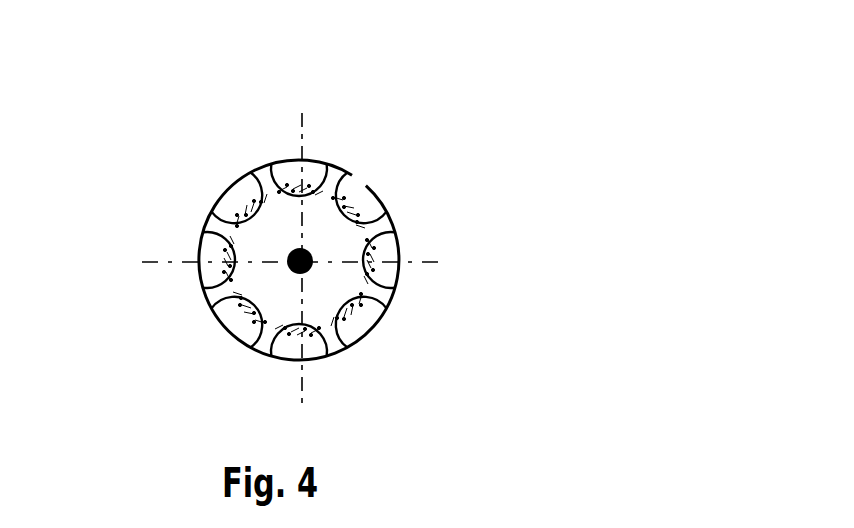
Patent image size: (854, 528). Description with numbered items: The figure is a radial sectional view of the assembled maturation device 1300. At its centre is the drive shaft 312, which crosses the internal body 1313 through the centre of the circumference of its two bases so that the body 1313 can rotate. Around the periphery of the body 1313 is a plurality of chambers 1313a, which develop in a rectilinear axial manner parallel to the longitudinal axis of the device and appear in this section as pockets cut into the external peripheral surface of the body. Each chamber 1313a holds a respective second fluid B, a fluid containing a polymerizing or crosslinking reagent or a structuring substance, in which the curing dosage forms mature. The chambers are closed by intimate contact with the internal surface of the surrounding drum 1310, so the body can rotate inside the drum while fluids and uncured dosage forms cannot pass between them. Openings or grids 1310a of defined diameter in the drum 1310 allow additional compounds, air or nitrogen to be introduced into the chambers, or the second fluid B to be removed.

The maturation device 1300 is at (313, 121).
The drum 1310 is at (392, 297).
The openings or grids 1310a is at (358, 178).
The internal body 1313 is at (320, 301).
The chambers 1313a is at (382, 253).
The drive shaft 312 is at (293, 259).
The second fluid B is at (247, 329).